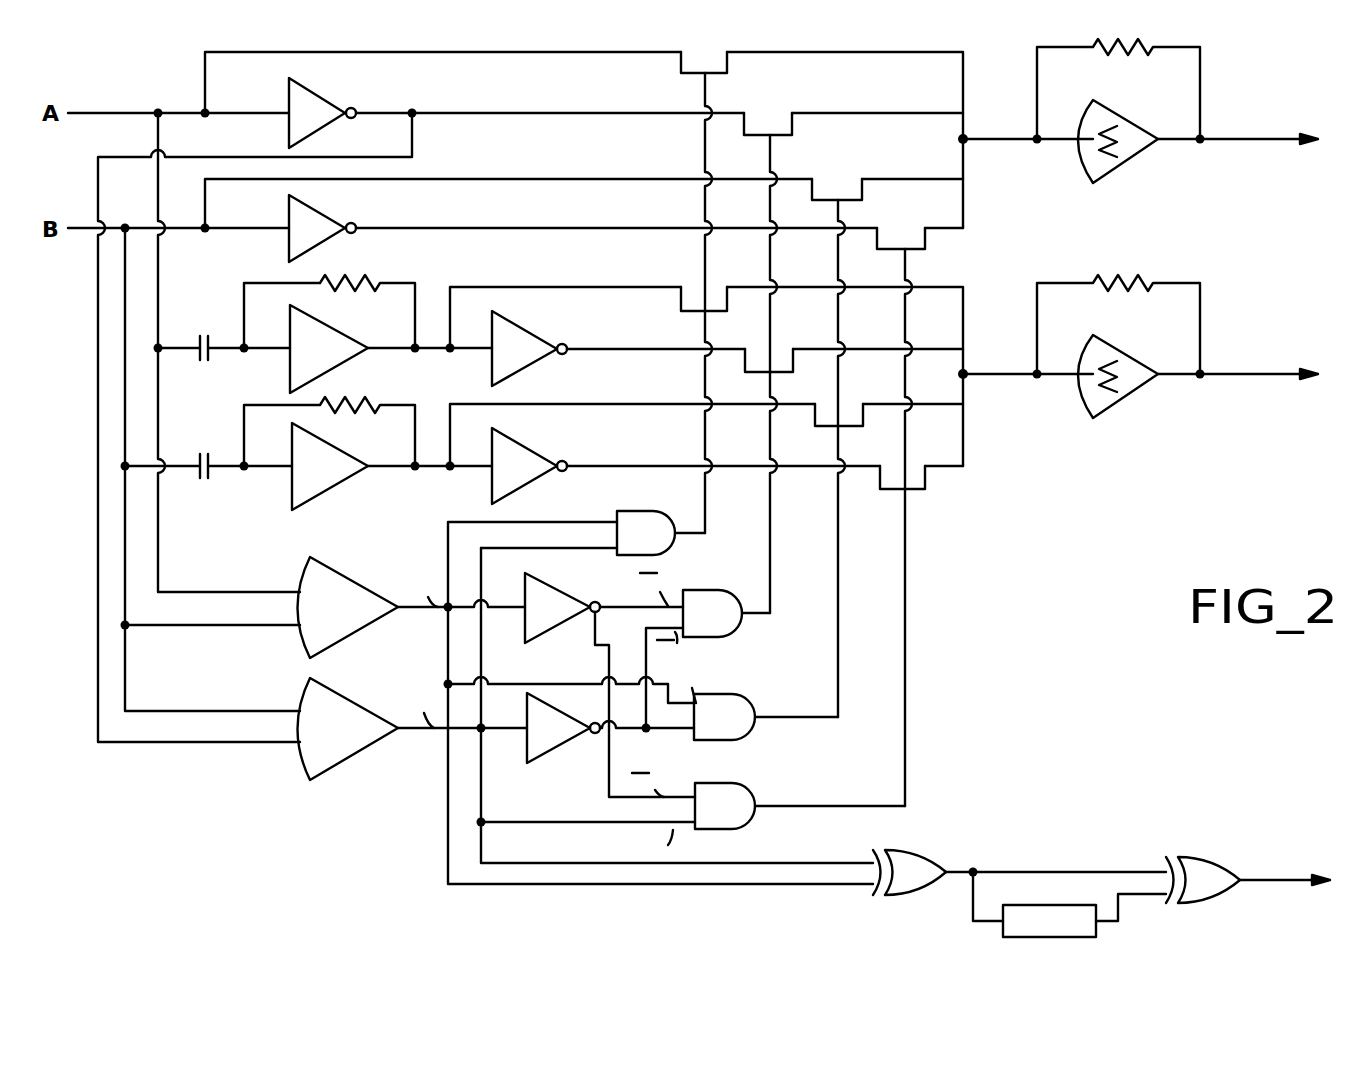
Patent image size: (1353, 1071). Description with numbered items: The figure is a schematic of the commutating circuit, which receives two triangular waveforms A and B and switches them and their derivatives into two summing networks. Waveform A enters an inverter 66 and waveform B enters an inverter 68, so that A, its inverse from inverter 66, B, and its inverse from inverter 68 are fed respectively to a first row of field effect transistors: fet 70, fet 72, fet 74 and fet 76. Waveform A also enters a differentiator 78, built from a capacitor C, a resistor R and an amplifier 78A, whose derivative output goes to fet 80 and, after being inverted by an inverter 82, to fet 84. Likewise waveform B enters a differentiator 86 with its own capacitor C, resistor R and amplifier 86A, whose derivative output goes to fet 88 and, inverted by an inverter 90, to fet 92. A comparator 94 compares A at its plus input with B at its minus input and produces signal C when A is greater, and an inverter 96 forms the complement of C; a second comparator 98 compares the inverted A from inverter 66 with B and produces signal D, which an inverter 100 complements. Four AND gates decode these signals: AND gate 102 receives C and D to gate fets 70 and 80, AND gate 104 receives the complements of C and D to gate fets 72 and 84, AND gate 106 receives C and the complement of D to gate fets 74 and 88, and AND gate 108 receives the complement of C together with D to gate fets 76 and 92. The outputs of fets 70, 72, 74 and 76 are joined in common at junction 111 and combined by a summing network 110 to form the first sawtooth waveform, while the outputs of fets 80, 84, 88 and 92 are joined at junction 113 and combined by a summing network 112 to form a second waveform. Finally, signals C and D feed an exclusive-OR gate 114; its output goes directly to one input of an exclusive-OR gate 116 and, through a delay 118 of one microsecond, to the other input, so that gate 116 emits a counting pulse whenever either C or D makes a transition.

The inverter 66 is at (328, 99).
The inverter 68 is at (328, 217).
The field effect transistor 70 is at (698, 62).
The field effect transistor 72 is at (780, 120).
The field effect transistor 74 is at (845, 188).
The field effect transistor 76 is at (902, 238).
The differentiator 78 is at (301, 317).
The amplifier 78A is at (325, 330).
The field effect transistor 80 is at (694, 300).
The inverter 82 is at (530, 333).
The field effect transistor 84 is at (761, 362).
The differentiator 86 is at (301, 452).
The amplifier 86A is at (333, 493).
The field effect transistor 88 is at (829, 418).
The inverter 90 is at (527, 443).
The field effect transistor 92 is at (893, 480).
The comparator 94 is at (344, 580).
The inverter 96 is at (562, 589).
The comparator 98 is at (355, 700).
The inverter 100 is at (562, 747).
The AND gate 102 is at (656, 512).
The AND gate 104 is at (722, 589).
The AND gate 106 is at (740, 694).
The AND gate 108 is at (751, 782).
The summing network 110 is at (1222, 82).
The junction 111 is at (966, 142).
The summing network 112 is at (1237, 316).
The junction 113 is at (966, 377).
The exclusive-OR gate 114 is at (927, 849).
The exclusive-OR gate 116 is at (1207, 855).
The delay 118 is at (1060, 905).